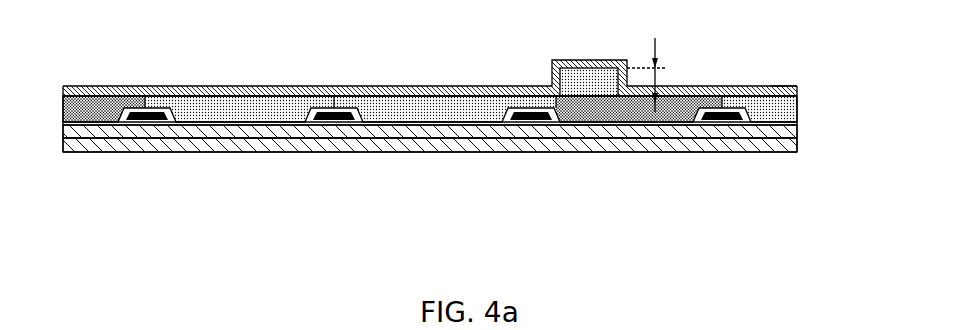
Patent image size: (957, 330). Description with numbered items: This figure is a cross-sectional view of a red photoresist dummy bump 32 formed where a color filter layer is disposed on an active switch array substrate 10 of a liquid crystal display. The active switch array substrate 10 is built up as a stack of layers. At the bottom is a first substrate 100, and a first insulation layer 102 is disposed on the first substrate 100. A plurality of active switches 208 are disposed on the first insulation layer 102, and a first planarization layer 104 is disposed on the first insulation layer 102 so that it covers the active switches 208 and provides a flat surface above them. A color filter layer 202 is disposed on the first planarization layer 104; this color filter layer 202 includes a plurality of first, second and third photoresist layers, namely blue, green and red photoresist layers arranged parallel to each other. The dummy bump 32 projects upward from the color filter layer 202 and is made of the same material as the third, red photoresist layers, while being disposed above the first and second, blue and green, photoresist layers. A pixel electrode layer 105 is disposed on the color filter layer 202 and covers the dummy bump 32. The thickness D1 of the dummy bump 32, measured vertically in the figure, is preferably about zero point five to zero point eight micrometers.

The active switch array substrate 10 is at (687, 173).
The dummy bump 32 is at (594, 60).
The first substrate 100 is at (787, 143).
The first insulation layer 102 is at (790, 130).
The first planarization layer 104 is at (798, 115).
The pixel electrode layer 105 is at (781, 87).
The color filter layer 202 is at (798, 94).
The active switch 208 is at (345, 126).
The thickness of the dummy bump D1 is at (659, 75).